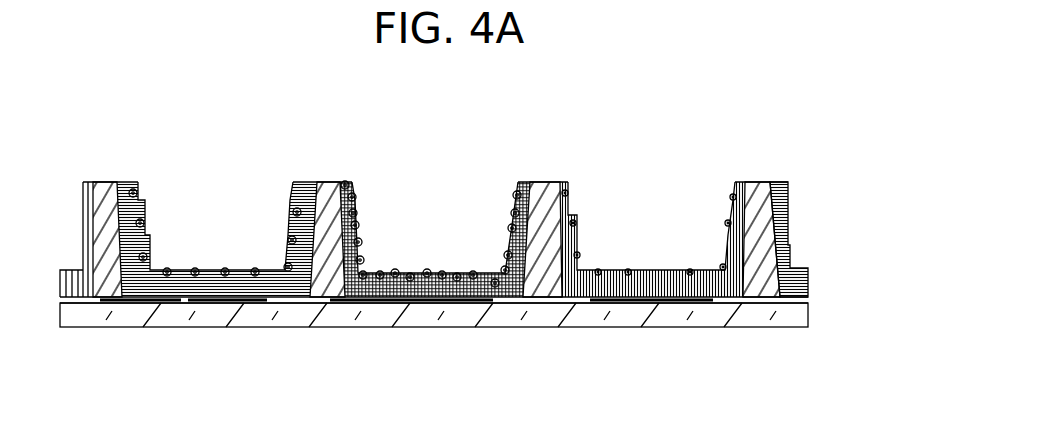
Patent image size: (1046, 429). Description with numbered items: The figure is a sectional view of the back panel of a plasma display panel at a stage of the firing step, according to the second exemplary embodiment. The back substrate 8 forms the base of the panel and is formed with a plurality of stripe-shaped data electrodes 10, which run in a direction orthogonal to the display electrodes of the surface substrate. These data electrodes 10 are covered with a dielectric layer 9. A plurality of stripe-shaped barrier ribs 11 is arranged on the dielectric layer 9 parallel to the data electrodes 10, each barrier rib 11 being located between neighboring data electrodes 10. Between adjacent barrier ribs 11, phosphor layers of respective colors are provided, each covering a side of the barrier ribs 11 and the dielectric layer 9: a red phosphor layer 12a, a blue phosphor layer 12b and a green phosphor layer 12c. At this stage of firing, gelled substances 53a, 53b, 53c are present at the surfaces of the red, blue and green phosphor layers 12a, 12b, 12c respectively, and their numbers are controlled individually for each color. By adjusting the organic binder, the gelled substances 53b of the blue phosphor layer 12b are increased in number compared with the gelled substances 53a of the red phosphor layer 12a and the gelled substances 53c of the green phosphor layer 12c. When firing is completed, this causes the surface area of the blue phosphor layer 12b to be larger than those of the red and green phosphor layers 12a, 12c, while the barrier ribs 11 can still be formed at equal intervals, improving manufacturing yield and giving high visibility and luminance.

The back substrate 8 is at (808, 318).
The dielectric layer 9 is at (757, 296).
The data electrodes 10 is at (680, 300).
The barrier ribs 11 is at (755, 253).
The red phosphor layer 12a is at (215, 293).
The blue phosphor layer 12b is at (417, 278).
The green phosphor layer 12c is at (660, 293).
The gelled substances 53a is at (257, 268).
The gelled substances 53b is at (505, 276).
The gelled substances 53c is at (722, 264).